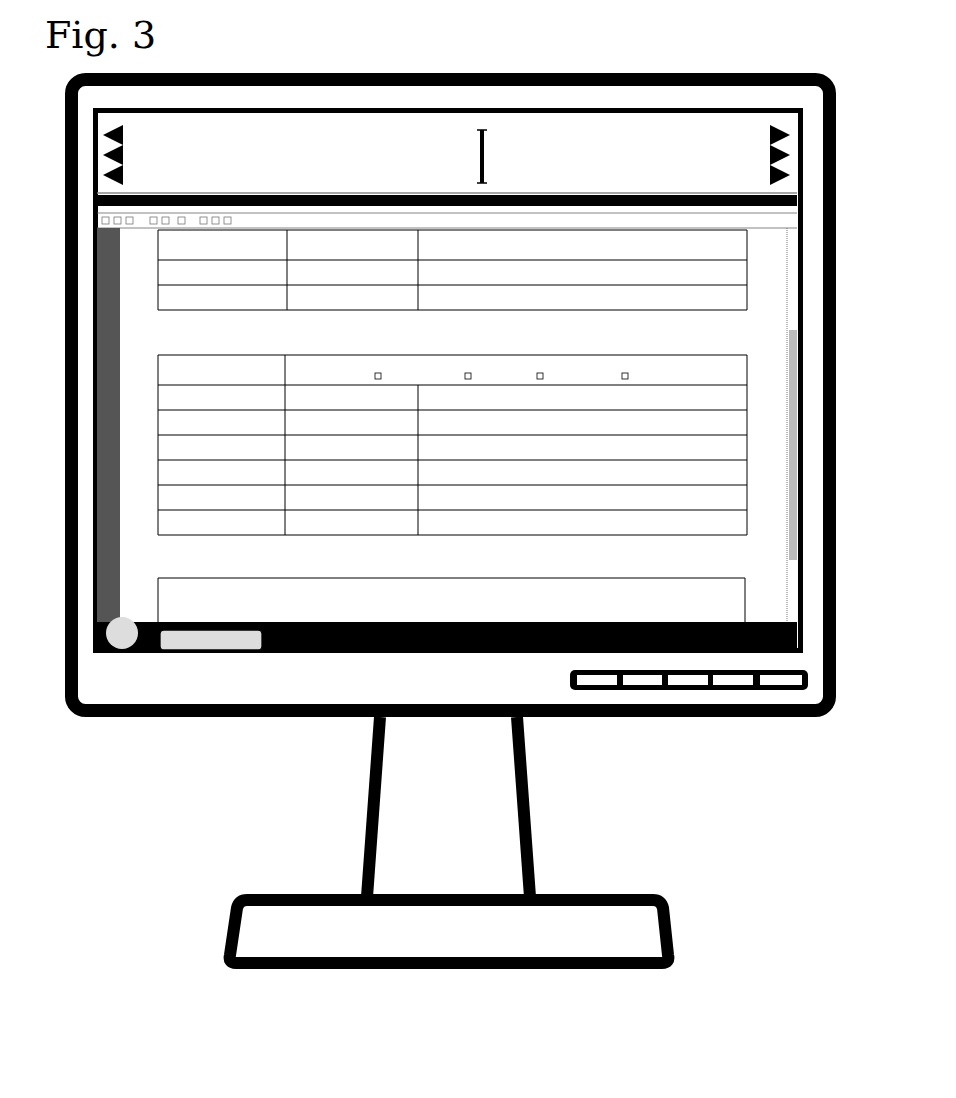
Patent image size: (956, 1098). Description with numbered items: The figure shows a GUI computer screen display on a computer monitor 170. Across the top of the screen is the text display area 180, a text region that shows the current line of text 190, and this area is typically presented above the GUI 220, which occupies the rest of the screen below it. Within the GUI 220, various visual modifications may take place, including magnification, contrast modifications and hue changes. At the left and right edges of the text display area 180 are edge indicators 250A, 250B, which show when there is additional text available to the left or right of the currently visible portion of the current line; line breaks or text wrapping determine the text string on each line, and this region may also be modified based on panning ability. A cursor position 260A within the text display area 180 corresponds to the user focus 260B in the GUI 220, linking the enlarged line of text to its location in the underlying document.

The computer monitor 170 is at (320, 70).
The text display area 180 is at (722, 126).
The current line of text 190 is at (418, 130).
The GUI 220 is at (793, 585).
The edge indicator 250A is at (117, 120).
The edge indicator 250B is at (770, 120).
The cursor position 260A is at (492, 136).
The user focus 260B is at (490, 324).